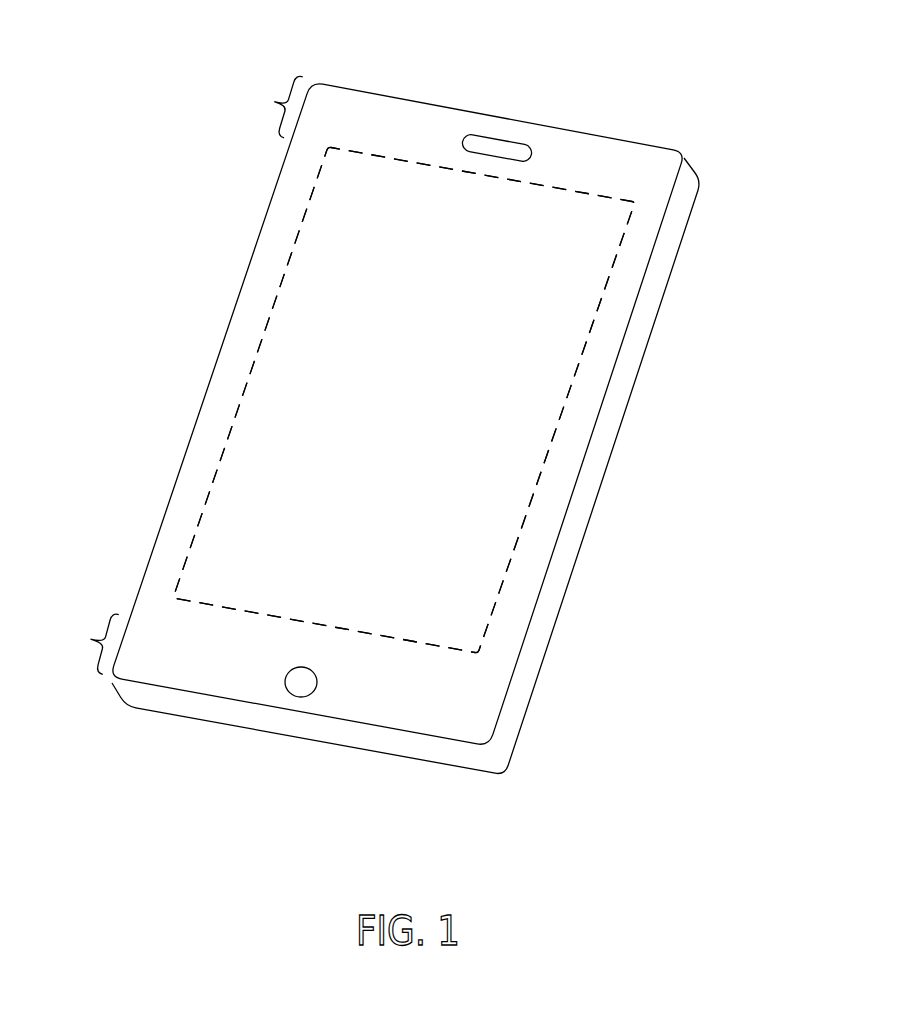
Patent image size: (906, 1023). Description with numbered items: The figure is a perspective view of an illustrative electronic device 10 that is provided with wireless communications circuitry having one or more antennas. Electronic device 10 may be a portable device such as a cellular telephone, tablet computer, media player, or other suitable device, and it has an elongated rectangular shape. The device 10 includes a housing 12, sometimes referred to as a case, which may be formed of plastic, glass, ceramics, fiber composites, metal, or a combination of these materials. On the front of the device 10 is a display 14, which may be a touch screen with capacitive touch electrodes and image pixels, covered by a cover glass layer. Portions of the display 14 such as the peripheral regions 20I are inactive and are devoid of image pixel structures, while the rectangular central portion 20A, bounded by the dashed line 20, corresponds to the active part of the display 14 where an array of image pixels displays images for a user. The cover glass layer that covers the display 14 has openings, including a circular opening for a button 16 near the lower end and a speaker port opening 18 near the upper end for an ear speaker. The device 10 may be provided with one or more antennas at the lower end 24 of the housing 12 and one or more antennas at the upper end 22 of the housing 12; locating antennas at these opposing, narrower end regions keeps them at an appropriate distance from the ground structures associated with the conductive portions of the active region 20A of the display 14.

The electronic device 10 is at (653, 104).
The housing 12 is at (692, 215).
The display 14 is at (550, 408).
The button 16 is at (304, 686).
The speaker port opening 18 is at (492, 139).
The dashed line 20 is at (215, 492).
The rectangular central portion 20A is at (218, 538).
The peripheral regions 20I is at (585, 157).
The upper end 22 is at (270, 104).
The lower end 24 is at (86, 641).